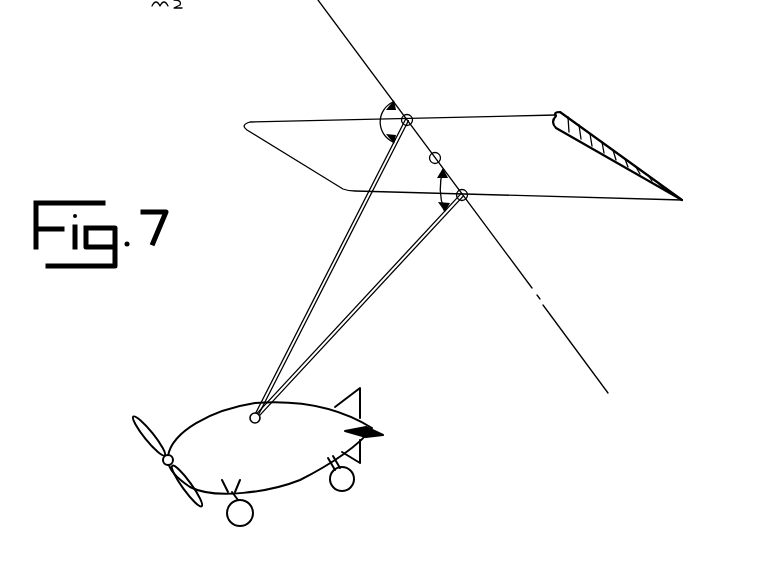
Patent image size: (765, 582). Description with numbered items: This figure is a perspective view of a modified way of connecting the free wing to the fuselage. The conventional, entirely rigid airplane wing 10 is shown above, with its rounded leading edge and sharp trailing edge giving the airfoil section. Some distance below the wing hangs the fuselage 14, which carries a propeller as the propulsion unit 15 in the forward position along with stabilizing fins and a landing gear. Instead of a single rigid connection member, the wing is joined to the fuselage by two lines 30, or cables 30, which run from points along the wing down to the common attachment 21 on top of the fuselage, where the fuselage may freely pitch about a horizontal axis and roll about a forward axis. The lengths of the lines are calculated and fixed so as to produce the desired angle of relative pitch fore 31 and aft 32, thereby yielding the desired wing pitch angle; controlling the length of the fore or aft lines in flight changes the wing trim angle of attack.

The airplane wing 10 is at (492, 130).
The fuselage 14 is at (227, 422).
The propulsion unit 15 is at (162, 468).
The attachment 21 is at (261, 421).
The lines 30 is at (338, 248).
The angle of relative pitch fore 31 is at (385, 125).
The angle of relative pitch aft 32 is at (440, 198).